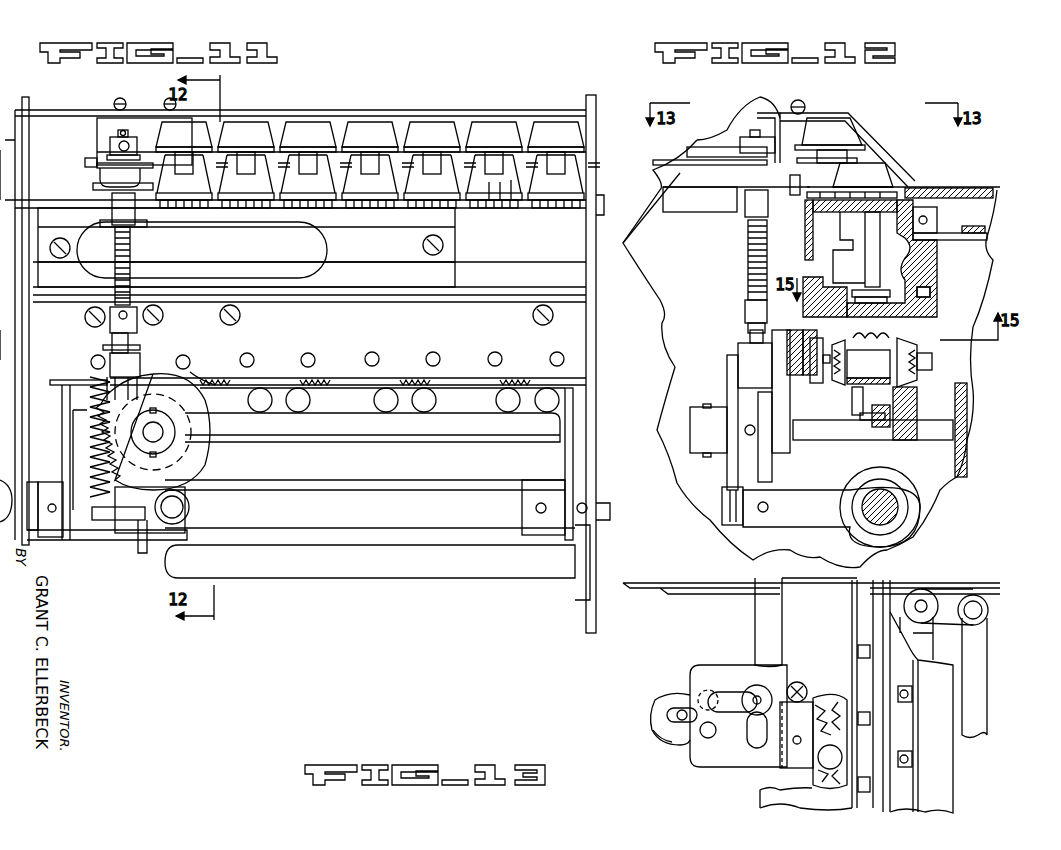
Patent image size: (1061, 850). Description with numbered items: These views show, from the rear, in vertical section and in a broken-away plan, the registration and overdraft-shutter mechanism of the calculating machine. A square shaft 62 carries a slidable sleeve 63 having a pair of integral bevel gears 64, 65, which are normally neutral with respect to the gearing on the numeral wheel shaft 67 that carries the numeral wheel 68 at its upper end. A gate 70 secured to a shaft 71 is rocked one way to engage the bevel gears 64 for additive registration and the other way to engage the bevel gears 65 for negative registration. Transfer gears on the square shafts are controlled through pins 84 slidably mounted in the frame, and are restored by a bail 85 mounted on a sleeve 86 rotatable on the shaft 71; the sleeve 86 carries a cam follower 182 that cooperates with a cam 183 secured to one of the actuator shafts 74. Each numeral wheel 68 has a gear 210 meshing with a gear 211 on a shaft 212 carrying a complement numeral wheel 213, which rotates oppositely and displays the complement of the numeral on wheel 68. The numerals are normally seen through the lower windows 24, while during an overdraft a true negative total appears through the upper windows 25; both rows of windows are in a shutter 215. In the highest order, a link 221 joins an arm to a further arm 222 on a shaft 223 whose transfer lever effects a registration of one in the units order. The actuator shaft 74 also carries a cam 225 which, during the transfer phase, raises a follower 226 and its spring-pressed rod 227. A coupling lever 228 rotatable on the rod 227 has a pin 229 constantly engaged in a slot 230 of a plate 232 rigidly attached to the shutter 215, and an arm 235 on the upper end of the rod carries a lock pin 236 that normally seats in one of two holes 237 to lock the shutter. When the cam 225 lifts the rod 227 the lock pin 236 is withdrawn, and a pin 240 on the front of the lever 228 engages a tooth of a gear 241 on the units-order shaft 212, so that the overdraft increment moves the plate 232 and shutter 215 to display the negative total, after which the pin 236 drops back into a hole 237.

In FIG. 13, the windows 24 is at (912, 697).
In FIG. 13, the windows 25 is at (858, 648).
In FIG. 12, the square shaft 62 is at (925, 373).
In FIG. 12, the sleeve 63 is at (868, 358).
In FIG. 12, the bevel gear 64 is at (925, 350).
In FIG. 12, the bevel gear 65 is at (837, 384).
In FIG. 12, the numeral wheel shaft 67 is at (880, 270).
In FIG. 11, the numeral wheel 68 is at (515, 183).
In FIG. 12, the numeral wheel 68 is at (890, 182).
In FIG. 11, the gate 70 is at (82, 380).
In FIG. 12, the gate 70 is at (853, 393).
In FIG. 12, the shaft 71 is at (890, 512).
In FIG. 11, the actuator shaft 74 is at (160, 432).
In FIG. 12, the actuator shaft 74 is at (958, 435).
In FIG. 11, the pin 84 is at (424, 405).
In FIG. 12, the pin 84 is at (862, 418).
In FIG. 11, the bail 85 is at (337, 413).
In FIG. 12, the bail 85 is at (885, 425).
In FIG. 11, the sleeve 86 is at (418, 515).
In FIG. 12, the sleeve 86 is at (900, 505).
In FIG. 11, the cam follower 182 is at (190, 518).
In FIG. 12, the cam follower 182 is at (735, 512).
In FIG. 11, the cam 183 is at (185, 490).
In FIG. 12, the cam 183 is at (735, 468).
In FIG. 12, the gear 210 is at (905, 197).
In FIG. 11, the gear 211 is at (497, 182).
In FIG. 12, the gear 211 is at (805, 205).
In FIG. 11, the shaft 212 is at (490, 182).
In FIG. 12, the shaft 212 is at (830, 182).
In FIG. 11, the numeral wheel 213 is at (493, 125).
In FIG. 12, the numeral wheel 213 is at (835, 120).
In FIG. 13, the numeral wheel 213 is at (820, 783).
In FIG. 11, the shutter 215 is at (275, 120).
In FIG. 12, the shutter 215 is at (897, 178).
In FIG. 13, the shutter 215 is at (765, 608).
In FIG. 12, the link 221 is at (987, 235).
In FIG. 13, the link 221 is at (980, 647).
In FIG. 12, the arm 222 is at (955, 240).
In FIG. 13, the arm 222 is at (966, 593).
In FIG. 12, the shaft 223 is at (930, 292).
In FIG. 13, the shaft 223 is at (930, 598).
In FIG. 11, the cam 225 is at (165, 470).
In FIG. 12, the cam 225 is at (775, 470).
In FIG. 11, the follower 226 is at (190, 368).
In FIG. 12, the follower 226 is at (750, 378).
In FIG. 11, the rod 227 is at (135, 253).
In FIG. 12, the rod 227 is at (748, 265).
In FIG. 13, the rod 227 is at (757, 695).
In FIG. 11, the coupling lever 228 is at (145, 205).
In FIG. 12, the coupling lever 228 is at (700, 188).
In FIG. 11, the pin 229 is at (140, 190).
In FIG. 12, the pin 229 is at (675, 178).
In FIG. 13, the pin 229 is at (672, 735).
In FIG. 13, the slot 230 is at (668, 714).
In FIG. 11, the plate 232 is at (103, 137).
In FIG. 12, the plate 232 is at (778, 128).
In FIG. 13, the plate 232 is at (680, 700).
In FIG. 11, the arm 235 is at (143, 160).
In FIG. 12, the arm 235 is at (715, 147).
In FIG. 13, the arm 235 is at (730, 700).
In FIG. 11, the pin 236 is at (105, 180).
In FIG. 12, the pin 236 is at (713, 156).
In FIG. 13, the pin 236 is at (688, 695).
In FIG. 13, the holes 237 is at (705, 735).
In FIG. 12, the pin 240 is at (790, 190).
In FIG. 11, the gear 241 is at (90, 160).
In FIG. 12, the gear 241 is at (845, 160).